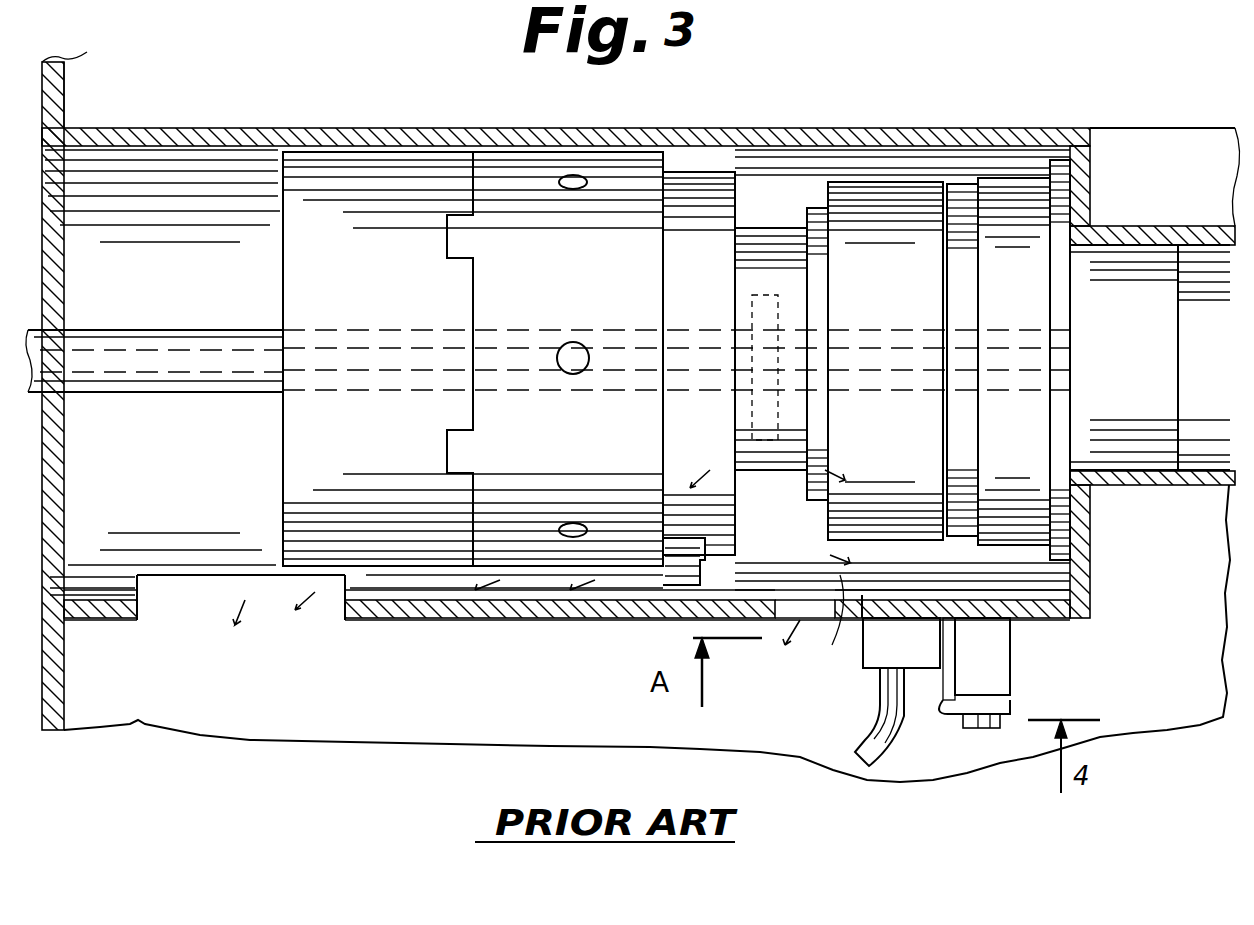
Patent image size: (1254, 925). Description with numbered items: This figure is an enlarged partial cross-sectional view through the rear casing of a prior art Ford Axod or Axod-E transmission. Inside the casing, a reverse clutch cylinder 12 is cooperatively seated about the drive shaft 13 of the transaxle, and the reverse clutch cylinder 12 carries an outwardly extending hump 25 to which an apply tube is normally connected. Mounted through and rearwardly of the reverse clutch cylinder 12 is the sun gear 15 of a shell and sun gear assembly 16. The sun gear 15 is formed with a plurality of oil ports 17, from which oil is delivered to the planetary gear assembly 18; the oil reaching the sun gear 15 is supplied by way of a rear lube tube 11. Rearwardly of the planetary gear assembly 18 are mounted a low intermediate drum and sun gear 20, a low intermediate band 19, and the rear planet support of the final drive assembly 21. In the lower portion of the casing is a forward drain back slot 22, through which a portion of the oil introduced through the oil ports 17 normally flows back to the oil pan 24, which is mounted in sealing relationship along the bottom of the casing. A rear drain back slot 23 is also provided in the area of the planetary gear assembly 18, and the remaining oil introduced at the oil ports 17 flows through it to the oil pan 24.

The rear lube tube 11 is at (876, 693).
The reverse clutch cylinder 12 is at (692, 172).
The drive shaft 13 is at (174, 330).
The sun gear 15 is at (780, 236).
The shell and sun gear assembly 16 is at (518, 183).
The oil ports 17 is at (756, 262).
The planetary gear assembly 18 is at (884, 180).
The low intermediate band 19 is at (1010, 173).
The low intermediate drum and sun gear 20 is at (958, 268).
The rear planet support of the final drive assembly 21 is at (1060, 199).
The forward drain back slot 22 is at (200, 603).
The rear drain back slot 23 is at (840, 595).
The oil pan 24 is at (460, 694).
The hump 25 is at (680, 575).